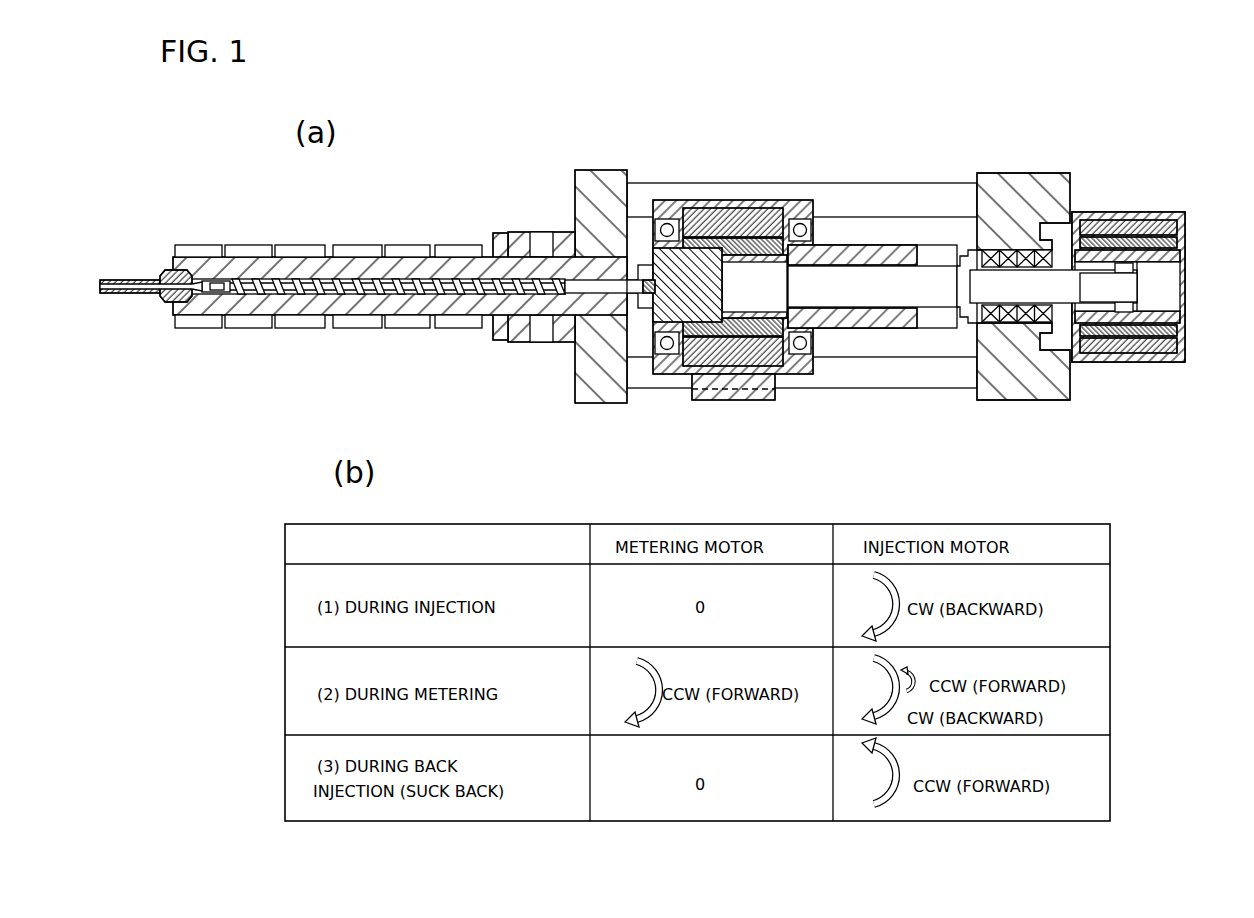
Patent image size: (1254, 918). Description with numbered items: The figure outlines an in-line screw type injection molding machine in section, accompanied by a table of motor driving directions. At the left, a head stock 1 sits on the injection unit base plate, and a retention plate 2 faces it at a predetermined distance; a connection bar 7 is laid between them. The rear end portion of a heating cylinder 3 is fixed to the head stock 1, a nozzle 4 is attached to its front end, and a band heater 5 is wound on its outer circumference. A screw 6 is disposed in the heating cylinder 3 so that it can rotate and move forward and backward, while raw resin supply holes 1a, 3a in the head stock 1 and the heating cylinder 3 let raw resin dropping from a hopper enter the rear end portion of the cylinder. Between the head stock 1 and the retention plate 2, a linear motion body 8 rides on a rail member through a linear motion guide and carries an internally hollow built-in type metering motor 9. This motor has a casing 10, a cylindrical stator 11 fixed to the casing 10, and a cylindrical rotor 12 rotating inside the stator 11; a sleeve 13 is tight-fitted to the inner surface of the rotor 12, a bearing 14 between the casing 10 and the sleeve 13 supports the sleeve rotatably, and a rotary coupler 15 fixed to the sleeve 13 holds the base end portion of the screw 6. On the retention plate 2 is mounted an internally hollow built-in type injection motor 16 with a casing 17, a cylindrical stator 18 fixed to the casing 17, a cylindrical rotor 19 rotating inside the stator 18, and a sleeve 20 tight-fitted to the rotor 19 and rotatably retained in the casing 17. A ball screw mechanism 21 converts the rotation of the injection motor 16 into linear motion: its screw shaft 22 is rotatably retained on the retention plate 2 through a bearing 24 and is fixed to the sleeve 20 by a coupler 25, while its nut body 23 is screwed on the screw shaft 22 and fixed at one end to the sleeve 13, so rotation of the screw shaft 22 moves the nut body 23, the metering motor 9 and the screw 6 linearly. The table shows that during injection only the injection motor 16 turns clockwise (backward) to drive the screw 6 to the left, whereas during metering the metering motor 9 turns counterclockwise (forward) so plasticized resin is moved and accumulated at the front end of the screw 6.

The head stock 1 is at (600, 170).
The raw resin supply hole 1a is at (542, 240).
The retention plate 2 is at (1025, 173).
The heating cylinder 3 is at (302, 262).
The raw resin supply hole 3a is at (537, 265).
The nozzle 4 is at (138, 283).
The band heater 5 is at (247, 243).
The screw 6 is at (365, 292).
The connection bar 7 is at (920, 183).
The linear motion body 8 is at (740, 400).
The metering motor 9 is at (843, 140).
The casing 10 is at (667, 219).
The cylindrical stator 11 is at (740, 208).
The cylindrical rotor 12 is at (780, 238).
The sleeve 13 is at (641, 262).
The bearing 14 is at (806, 232).
The rotary coupler 15 is at (645, 312).
The injection motor 16 is at (1240, 140).
The casing 17 is at (1092, 212).
The cylindrical stator 18 is at (1130, 225).
The cylindrical rotor 19 is at (1167, 240).
The sleeve 20 is at (1165, 257).
The ball screw mechanism 21 is at (970, 436).
The screw shaft 22 is at (937, 300).
The nut body 23 is at (866, 328).
The bearing 24 is at (1033, 322).
The coupler 25 is at (1150, 296).